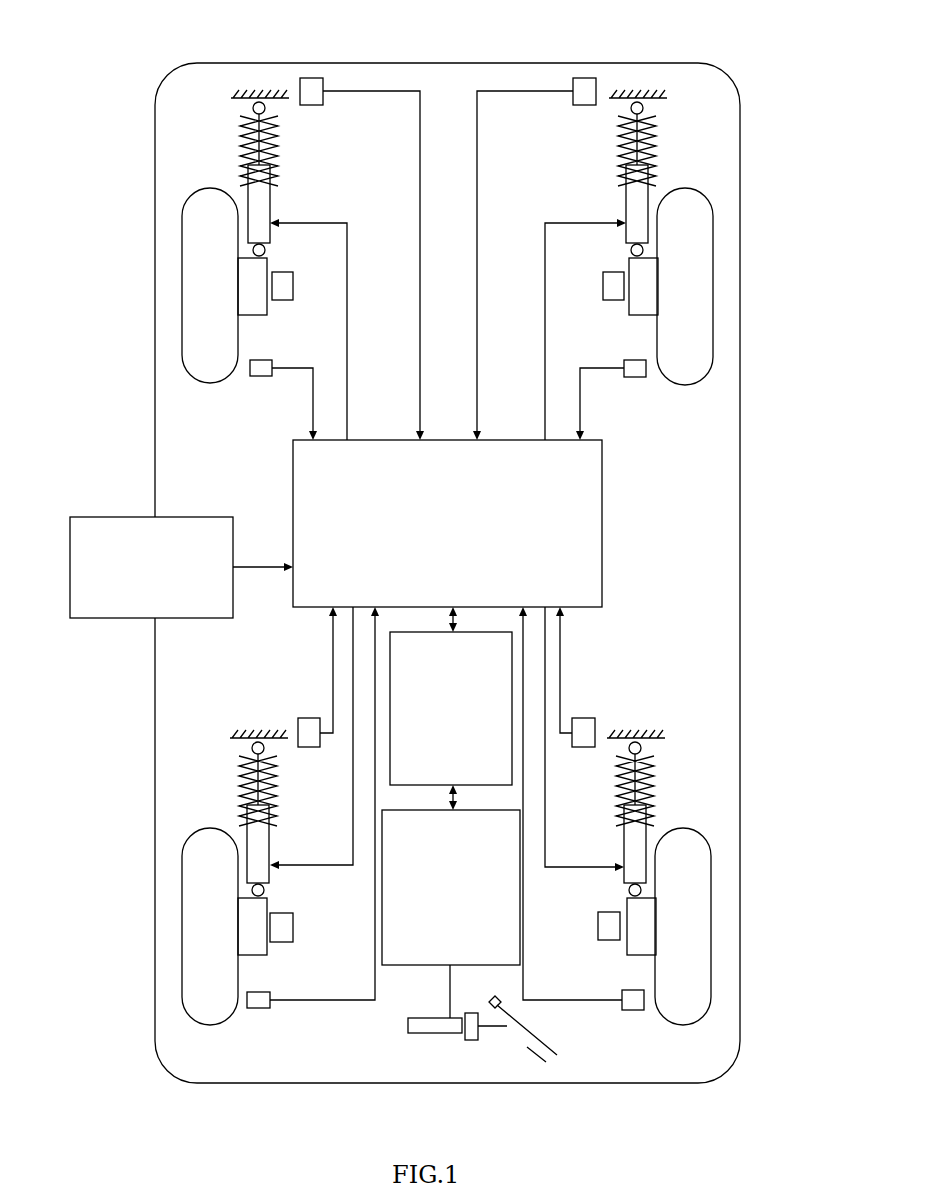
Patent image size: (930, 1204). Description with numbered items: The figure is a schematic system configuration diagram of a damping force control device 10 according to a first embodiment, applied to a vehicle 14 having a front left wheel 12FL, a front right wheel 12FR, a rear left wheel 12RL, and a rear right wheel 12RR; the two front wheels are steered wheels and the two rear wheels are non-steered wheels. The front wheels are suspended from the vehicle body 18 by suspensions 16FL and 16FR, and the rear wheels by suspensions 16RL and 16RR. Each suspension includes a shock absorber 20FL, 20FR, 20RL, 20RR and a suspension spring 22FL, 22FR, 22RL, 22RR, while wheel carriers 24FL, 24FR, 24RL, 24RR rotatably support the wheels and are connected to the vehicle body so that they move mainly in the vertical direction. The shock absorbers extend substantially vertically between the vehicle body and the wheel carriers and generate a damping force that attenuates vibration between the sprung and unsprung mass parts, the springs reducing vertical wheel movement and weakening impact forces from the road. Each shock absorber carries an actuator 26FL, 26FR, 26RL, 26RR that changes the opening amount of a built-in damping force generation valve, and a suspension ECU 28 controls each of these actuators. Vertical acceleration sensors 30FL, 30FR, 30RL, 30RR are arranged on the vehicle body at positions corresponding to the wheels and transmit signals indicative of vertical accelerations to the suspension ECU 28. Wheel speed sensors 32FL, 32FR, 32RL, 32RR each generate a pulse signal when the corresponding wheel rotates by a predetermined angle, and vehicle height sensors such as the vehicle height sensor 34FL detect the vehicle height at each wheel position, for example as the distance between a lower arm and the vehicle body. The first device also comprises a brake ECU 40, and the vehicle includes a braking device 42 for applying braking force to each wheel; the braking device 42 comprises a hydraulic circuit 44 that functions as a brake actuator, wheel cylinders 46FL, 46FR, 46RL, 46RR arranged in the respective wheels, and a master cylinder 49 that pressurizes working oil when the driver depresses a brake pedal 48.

The damping force control device 10 is at (106, 165).
The front left wheel 12FL is at (184, 310).
The front right wheel 12FR is at (712, 287).
The rear left wheel 12RL is at (184, 930).
The rear right wheel 12RR is at (712, 930).
The vehicle 14 is at (741, 527).
The suspension 16FL is at (240, 168).
The suspension 16FR is at (656, 168).
The suspension 16RL is at (212, 808).
The suspension 16RR is at (675, 810).
The vehicle body 18 is at (266, 94).
The shock absorber 20FL is at (256, 221).
The shock absorber 20FR is at (640, 216).
The shock absorber 20RL is at (270, 850).
The shock absorber 20RR is at (624, 850).
The suspension spring 22FL is at (282, 128).
The suspension spring 22FR is at (615, 128).
The suspension spring 22RL is at (246, 796).
The suspension spring 22RR is at (648, 796).
The wheel carrier 24FL is at (268, 312).
The wheel carrier 24FR is at (628, 312).
The wheel carrier 24RL is at (268, 955).
The wheel carrier 24RR is at (626, 955).
The actuator 26FL is at (279, 222).
The actuator 26FR is at (617, 222).
The actuator 26RL is at (277, 872).
The actuator 26RR is at (617, 875).
The suspension ECU 28 is at (433, 560).
The vertical acceleration sensor 30FL is at (312, 77).
The vertical acceleration sensor 30FR is at (585, 77).
The vertical acceleration sensor 30RL is at (309, 717).
The vertical acceleration sensor 30RR is at (586, 717).
The wheel speed sensor 32FL is at (260, 377).
The wheel speed sensor 32FR is at (636, 378).
The wheel speed sensor 32RL is at (258, 1009).
The wheel speed sensor 32RR is at (633, 1011).
The vehicle height sensor 34FL is at (186, 517).
The brake ECU 40 is at (437, 751).
The braking device 42 is at (464, 1020).
The hydraulic circuit 44 is at (451, 875).
The wheel cylinder 46FL is at (290, 263).
The wheel cylinder 46FR is at (613, 271).
The wheel cylinder 46RL is at (293, 928).
The wheel cylinder 46RR is at (598, 928).
The brake pedal 48 is at (525, 1027).
The master cylinder 49 is at (425, 1035).